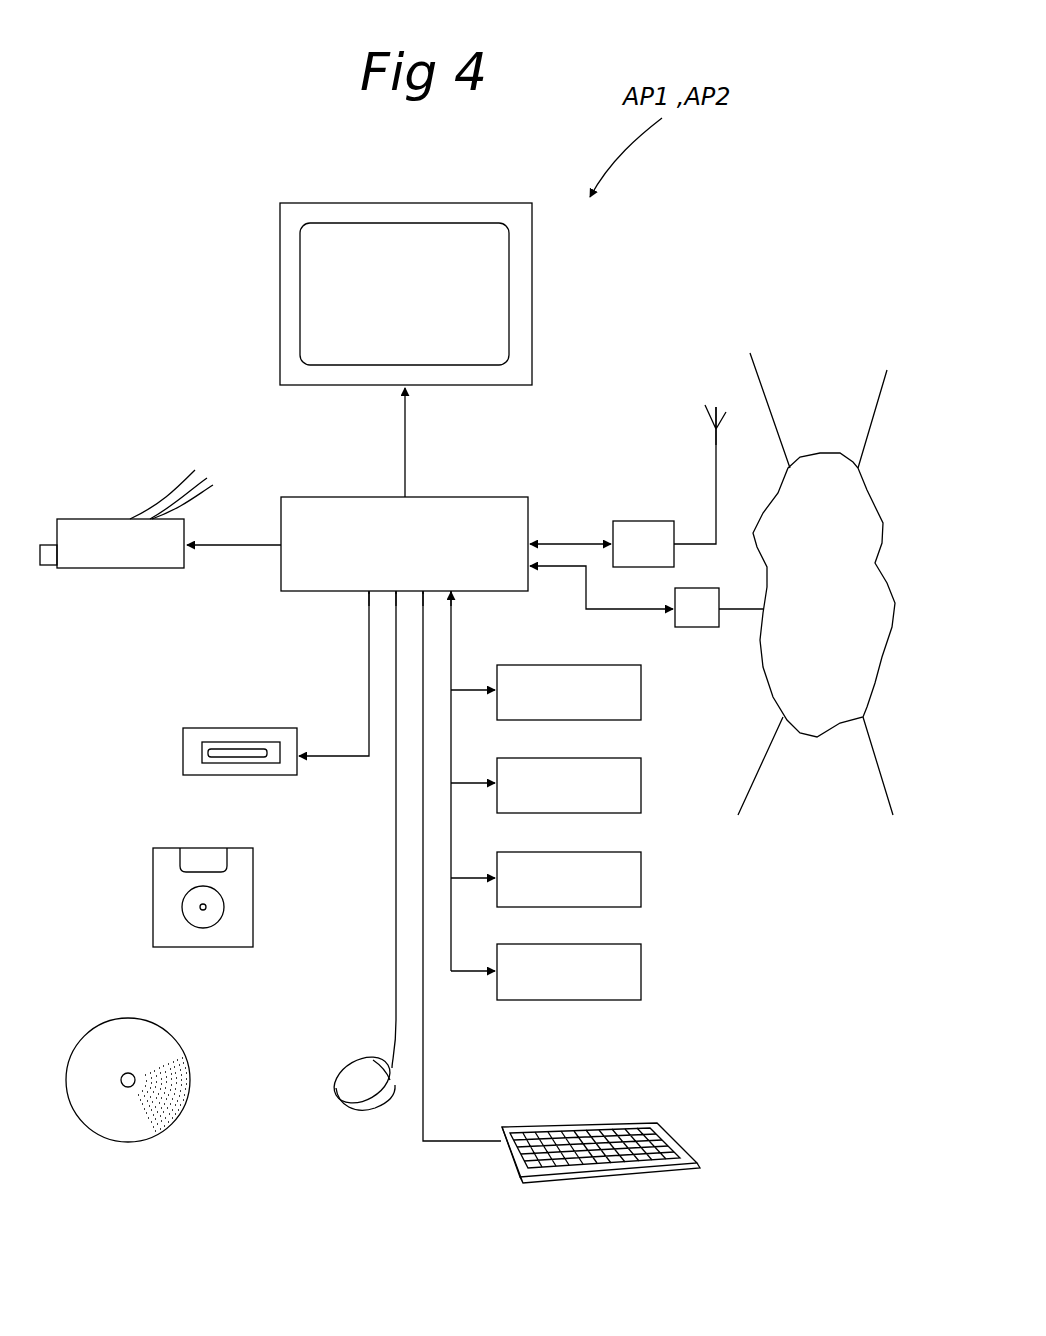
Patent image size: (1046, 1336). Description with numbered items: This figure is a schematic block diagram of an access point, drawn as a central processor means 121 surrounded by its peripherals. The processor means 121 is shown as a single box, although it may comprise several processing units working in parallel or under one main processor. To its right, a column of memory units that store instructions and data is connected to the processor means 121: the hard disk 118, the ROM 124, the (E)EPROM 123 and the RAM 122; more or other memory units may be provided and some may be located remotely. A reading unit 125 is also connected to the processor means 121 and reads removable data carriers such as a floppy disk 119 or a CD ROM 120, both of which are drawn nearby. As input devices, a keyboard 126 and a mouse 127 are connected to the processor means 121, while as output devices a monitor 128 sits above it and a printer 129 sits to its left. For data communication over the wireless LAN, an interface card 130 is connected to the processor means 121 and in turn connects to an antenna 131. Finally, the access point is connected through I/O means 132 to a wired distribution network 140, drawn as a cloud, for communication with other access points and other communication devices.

The monitor 128 is at (403, 242).
The processor means 121 is at (342, 508).
The printer 129 is at (117, 527).
The interface card 130 is at (648, 533).
The antenna 131 is at (713, 480).
The I/O means 132 is at (695, 623).
The wired distribution network 140 is at (817, 490).
The hard disk 118 is at (641, 680).
The ROM 124 is at (641, 772).
The (E)EPROM 123 is at (641, 867).
The RAM 122 is at (641, 960).
The reading unit 125 is at (205, 733).
The floppy disk 119 is at (168, 876).
The CD ROM 120 is at (130, 1032).
The mouse 127 is at (350, 1077).
The keyboard 126 is at (662, 1122).